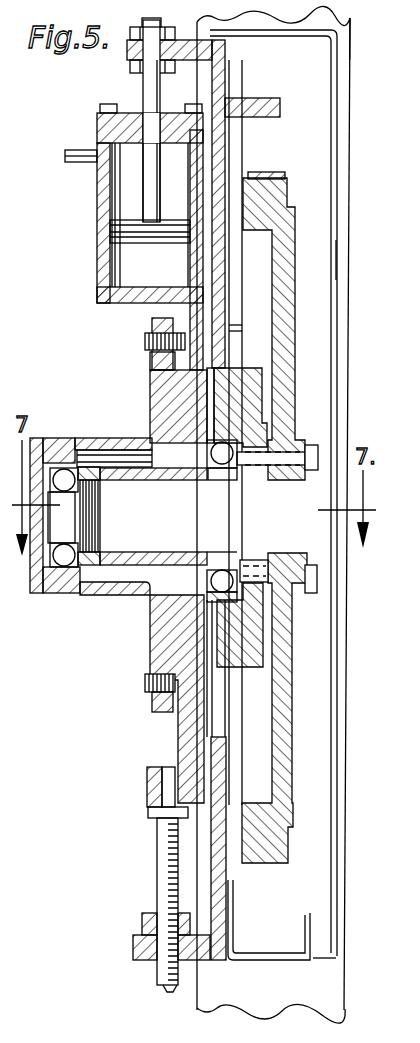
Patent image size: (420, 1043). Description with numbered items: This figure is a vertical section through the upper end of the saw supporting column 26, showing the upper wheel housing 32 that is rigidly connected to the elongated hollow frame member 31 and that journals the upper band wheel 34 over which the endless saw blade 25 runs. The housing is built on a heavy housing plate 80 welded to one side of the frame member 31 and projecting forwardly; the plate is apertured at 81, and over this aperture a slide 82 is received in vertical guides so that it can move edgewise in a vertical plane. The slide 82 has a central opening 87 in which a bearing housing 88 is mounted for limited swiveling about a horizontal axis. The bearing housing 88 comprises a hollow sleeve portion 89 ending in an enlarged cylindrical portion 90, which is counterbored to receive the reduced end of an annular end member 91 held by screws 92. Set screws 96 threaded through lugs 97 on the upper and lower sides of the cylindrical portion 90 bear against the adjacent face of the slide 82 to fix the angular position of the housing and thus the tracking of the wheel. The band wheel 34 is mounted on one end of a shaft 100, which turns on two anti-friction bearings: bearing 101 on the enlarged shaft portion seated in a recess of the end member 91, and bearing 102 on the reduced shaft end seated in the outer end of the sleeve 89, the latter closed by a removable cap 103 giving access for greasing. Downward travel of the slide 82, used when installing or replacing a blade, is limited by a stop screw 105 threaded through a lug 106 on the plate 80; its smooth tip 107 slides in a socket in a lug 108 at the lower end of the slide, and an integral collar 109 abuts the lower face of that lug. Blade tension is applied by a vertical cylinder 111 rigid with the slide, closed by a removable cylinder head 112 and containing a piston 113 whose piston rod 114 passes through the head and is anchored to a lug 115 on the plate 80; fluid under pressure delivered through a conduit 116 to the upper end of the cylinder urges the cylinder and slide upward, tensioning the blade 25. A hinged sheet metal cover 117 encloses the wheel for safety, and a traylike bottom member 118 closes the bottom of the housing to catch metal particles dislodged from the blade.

The saw blade 25 is at (270, 173).
The saw supporting column 26 is at (349, 973).
The frame member 31 is at (352, 36).
The upper wheel housing 32 is at (340, 126).
The upper band wheel 34 is at (285, 312).
The housing plate 80 is at (224, 152).
The aperture 81 is at (230, 335).
The slide 82 is at (152, 322).
The central opening 87 is at (208, 372).
The bearing housing 88 is at (120, 603).
The sleeve portion 89 is at (98, 444).
The cylindrical portion 90 is at (160, 402).
The annular end member 91 is at (260, 668).
The screws 92 is at (248, 380).
The set screws 96 is at (146, 344).
The lugs 97 is at (155, 364).
The shaft 100 is at (98, 567).
The anti-friction bearing 101 is at (160, 632).
The anti-friction bearing 102 is at (55, 594).
The removable cap 103 is at (38, 438).
The stop screw 105 is at (158, 868).
The lug 106 is at (135, 948).
The tip 107 is at (148, 768).
The lug 108 is at (148, 808).
The collar 109 is at (150, 818).
The cylinder 111 is at (103, 216).
The cylinder head 112 is at (97, 122).
The piston 113 is at (108, 244).
The piston rod 114 is at (144, 88).
The lug 115 is at (128, 52).
The conduit 116 is at (78, 162).
The sheet metal cover 117 is at (340, 262).
The traylike bottom member 118 is at (268, 963).